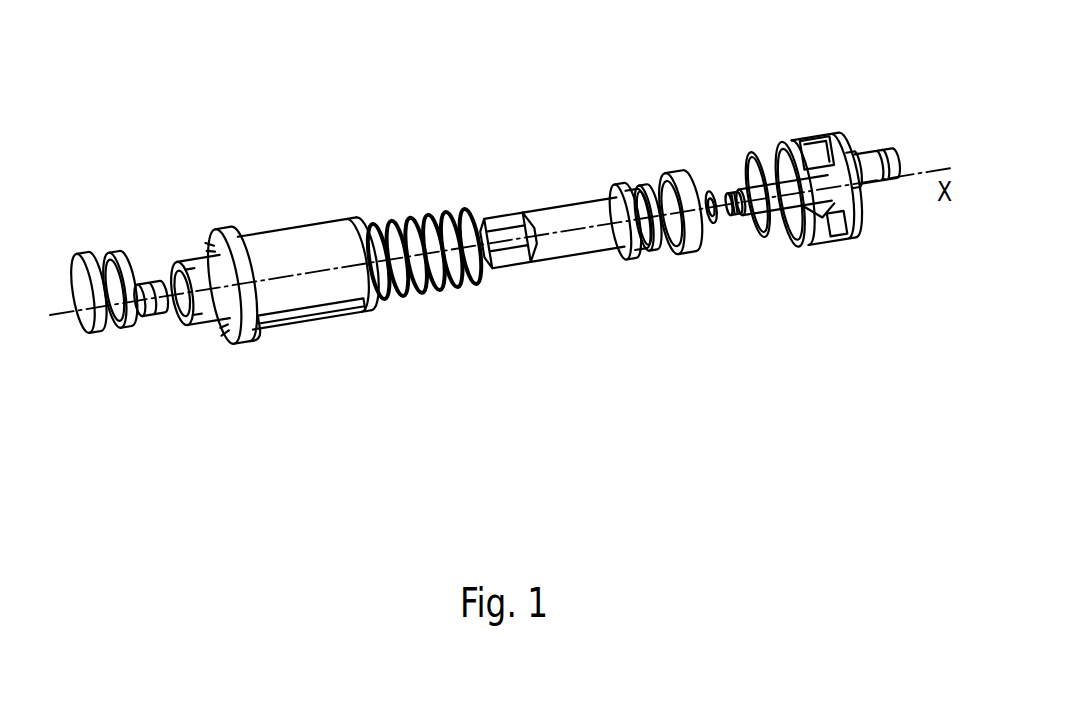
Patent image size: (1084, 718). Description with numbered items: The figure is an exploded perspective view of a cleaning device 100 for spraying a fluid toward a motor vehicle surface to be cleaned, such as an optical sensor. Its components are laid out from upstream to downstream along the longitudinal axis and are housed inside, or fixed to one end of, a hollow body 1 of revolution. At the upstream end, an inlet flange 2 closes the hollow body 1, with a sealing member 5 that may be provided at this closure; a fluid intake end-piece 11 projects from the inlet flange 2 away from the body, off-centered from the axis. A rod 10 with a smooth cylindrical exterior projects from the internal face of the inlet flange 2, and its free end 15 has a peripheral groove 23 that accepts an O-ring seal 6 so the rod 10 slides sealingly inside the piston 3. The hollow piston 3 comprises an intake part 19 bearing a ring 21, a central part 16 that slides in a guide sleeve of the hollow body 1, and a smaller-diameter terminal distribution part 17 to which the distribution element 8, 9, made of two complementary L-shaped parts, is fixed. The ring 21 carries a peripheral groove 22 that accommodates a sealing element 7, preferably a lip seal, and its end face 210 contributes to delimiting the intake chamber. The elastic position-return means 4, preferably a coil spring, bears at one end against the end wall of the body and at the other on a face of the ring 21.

The cleaning device 100 is at (533, 405).
The hollow body 1 is at (295, 303).
The inlet flange 2 is at (827, 240).
The piston 3 is at (533, 270).
The elastic position-return means 4 is at (410, 290).
The sealing member 5 is at (767, 226).
The O-ring seal 6 is at (712, 232).
The sealing element 7 is at (677, 242).
The distribution element part 8 is at (150, 337).
The distribution element part 9 is at (105, 333).
The rod 10 is at (778, 187).
The fluid intake end-piece 11 is at (865, 157).
The free end of the rod 15 is at (777, 254).
The central part of the piston 16 is at (518, 192).
The terminal distribution part 17 is at (398, 188).
The intake part of the piston 19 is at (606, 175).
The ring 21 is at (623, 253).
The peripheral groove 22 is at (643, 240).
The peripheral groove 23 is at (733, 197).
The end face of the ring 210 is at (653, 187).